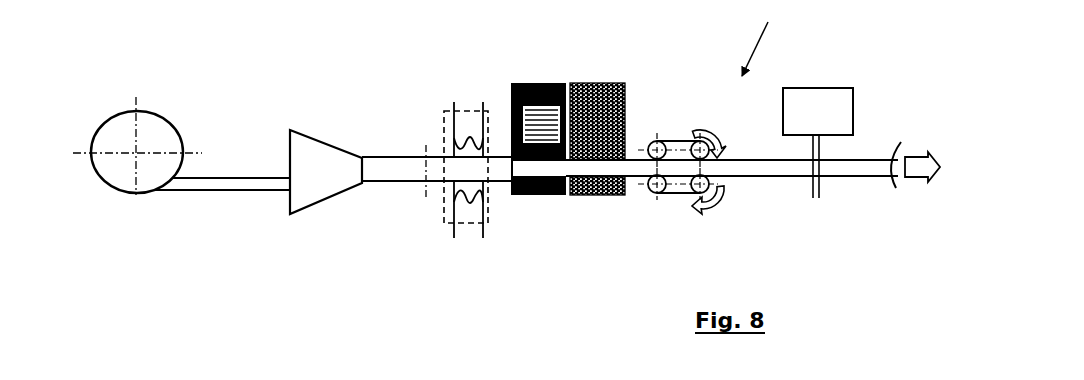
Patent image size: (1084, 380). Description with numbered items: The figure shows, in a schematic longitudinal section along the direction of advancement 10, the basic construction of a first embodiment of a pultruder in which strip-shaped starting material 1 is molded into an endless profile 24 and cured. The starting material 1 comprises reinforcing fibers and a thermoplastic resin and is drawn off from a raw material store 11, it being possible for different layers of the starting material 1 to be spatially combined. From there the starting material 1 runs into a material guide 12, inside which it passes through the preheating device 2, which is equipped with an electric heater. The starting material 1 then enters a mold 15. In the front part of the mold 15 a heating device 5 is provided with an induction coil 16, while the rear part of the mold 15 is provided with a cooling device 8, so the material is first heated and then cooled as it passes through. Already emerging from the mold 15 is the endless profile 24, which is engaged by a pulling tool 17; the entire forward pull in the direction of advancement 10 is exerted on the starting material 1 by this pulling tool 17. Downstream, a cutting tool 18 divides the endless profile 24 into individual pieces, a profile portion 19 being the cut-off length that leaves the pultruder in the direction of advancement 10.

The starting material 1 is at (236, 173).
The raw material store 11 is at (156, 189).
The material guide 12 is at (311, 190).
The preheating device 2 is at (474, 218).
The induction coil 16 is at (512, 107).
The heating device 5 is at (537, 113).
The mold 15 is at (546, 200).
The cooling device 8 is at (612, 200).
The pulling tool 17 is at (679, 133).
The cutting tool 18 is at (816, 103).
The endless profile 24 is at (777, 176).
The profile portion 19 is at (864, 168).
The direction of advancement 10 is at (921, 163).